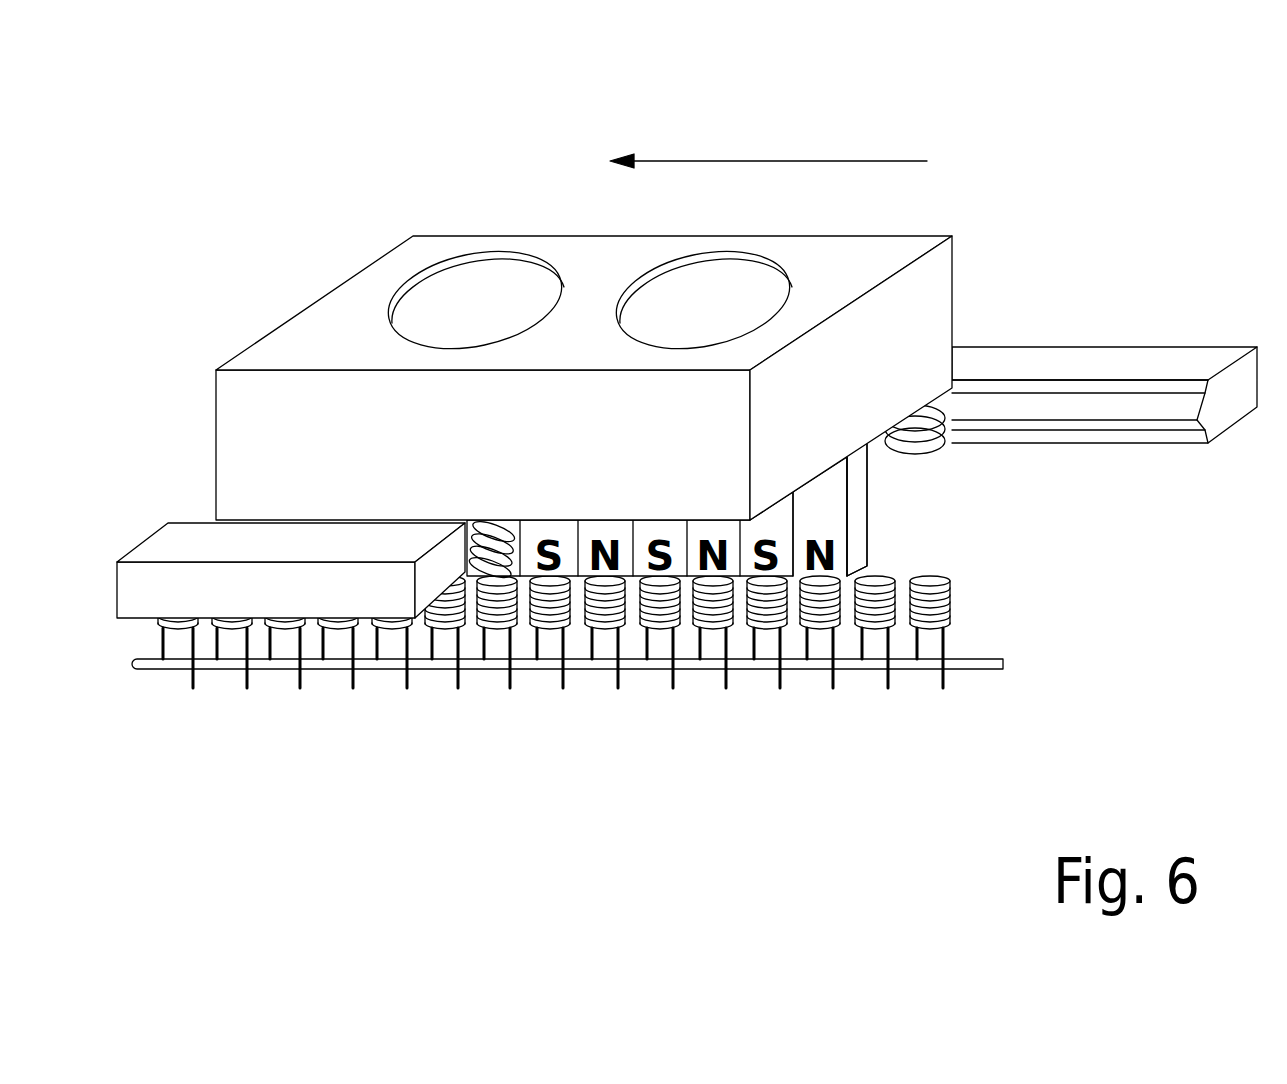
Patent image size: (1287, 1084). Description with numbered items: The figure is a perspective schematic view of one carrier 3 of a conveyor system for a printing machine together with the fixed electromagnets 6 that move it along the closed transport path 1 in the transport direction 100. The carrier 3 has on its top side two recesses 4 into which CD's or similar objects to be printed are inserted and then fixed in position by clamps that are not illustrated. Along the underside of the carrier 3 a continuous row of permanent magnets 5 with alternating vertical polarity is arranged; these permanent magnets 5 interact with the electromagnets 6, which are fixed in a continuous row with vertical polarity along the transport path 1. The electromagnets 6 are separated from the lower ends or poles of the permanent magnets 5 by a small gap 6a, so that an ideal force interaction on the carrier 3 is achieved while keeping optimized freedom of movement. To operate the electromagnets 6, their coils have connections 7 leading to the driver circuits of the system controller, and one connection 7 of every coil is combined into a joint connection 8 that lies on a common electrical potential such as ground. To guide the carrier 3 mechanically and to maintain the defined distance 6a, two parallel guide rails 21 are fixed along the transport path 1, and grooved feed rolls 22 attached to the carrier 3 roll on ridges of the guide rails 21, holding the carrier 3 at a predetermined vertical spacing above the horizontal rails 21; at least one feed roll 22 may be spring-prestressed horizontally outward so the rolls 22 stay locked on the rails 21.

The transport path 1 is at (733, 304).
The carrier 3 is at (925, 300).
The recess 4 is at (680, 300).
The permanent magnet 5 is at (830, 503).
The electromagnet 6 is at (782, 610).
The gap 6a is at (802, 587).
The connection 7 is at (890, 687).
The joint connection 8 is at (995, 665).
The guide rail 21 is at (1102, 360).
The feed roll 22 is at (930, 438).
The transport direction 100 is at (730, 161).